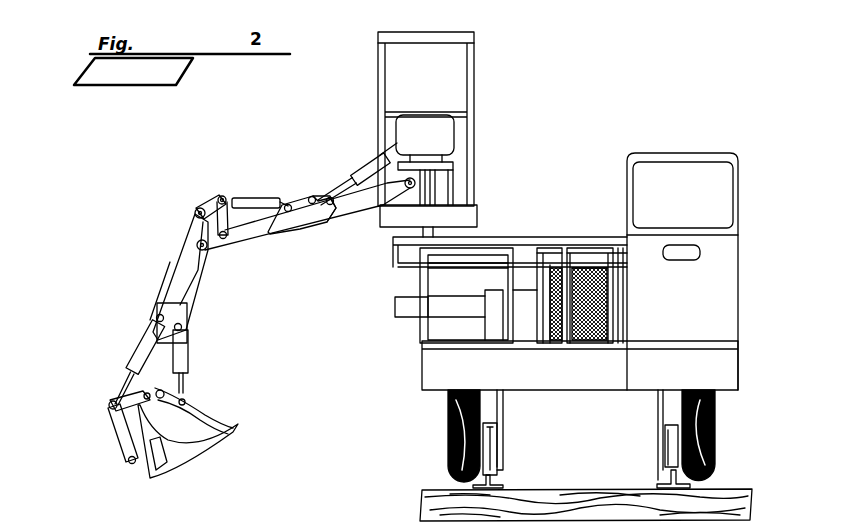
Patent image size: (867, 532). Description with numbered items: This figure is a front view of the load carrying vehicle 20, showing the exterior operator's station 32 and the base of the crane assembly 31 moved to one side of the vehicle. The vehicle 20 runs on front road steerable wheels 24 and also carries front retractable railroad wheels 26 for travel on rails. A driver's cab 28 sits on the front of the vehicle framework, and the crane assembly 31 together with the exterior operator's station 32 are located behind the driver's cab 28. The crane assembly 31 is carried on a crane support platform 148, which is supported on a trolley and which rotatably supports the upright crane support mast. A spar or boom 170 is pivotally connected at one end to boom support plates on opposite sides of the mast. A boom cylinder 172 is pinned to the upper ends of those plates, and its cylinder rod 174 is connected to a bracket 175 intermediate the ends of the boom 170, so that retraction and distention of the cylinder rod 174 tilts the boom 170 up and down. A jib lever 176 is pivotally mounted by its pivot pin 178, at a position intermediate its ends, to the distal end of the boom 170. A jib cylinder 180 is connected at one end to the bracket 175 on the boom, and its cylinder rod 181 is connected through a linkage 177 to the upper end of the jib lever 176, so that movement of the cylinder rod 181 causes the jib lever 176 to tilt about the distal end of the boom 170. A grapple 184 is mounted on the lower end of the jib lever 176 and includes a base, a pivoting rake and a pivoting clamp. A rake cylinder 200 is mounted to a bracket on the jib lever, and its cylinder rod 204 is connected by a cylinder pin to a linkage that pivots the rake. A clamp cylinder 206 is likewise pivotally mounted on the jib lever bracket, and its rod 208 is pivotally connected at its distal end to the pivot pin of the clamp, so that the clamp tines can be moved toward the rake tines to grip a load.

The load carrying vehicle 20 is at (489, 74).
The front road steerable wheels 24 is at (447, 442).
The front retractable railroad wheels 26 is at (492, 455).
The driver's cab 28 is at (740, 194).
The crane assembly 31 is at (186, 240).
The exterior operator's station 32 is at (374, 46).
The crane support platform 148 is at (468, 217).
The boom 170 is at (349, 222).
The boom cylinder 172 is at (369, 156).
The cylinder rod 174 is at (330, 192).
The bracket 175 is at (300, 200).
The jib lever 176 is at (190, 292).
The linkage 177 is at (207, 205).
The pivot pin 178 is at (210, 252).
The jib cylinder 180 is at (262, 198).
The cylinder rod 181 is at (230, 196).
The grapple 184 is at (173, 466).
The rake cylinder 200 is at (135, 348).
The cylinder rod 204 is at (118, 398).
The clamp cylinder 206 is at (190, 366).
The rod 208 is at (192, 392).